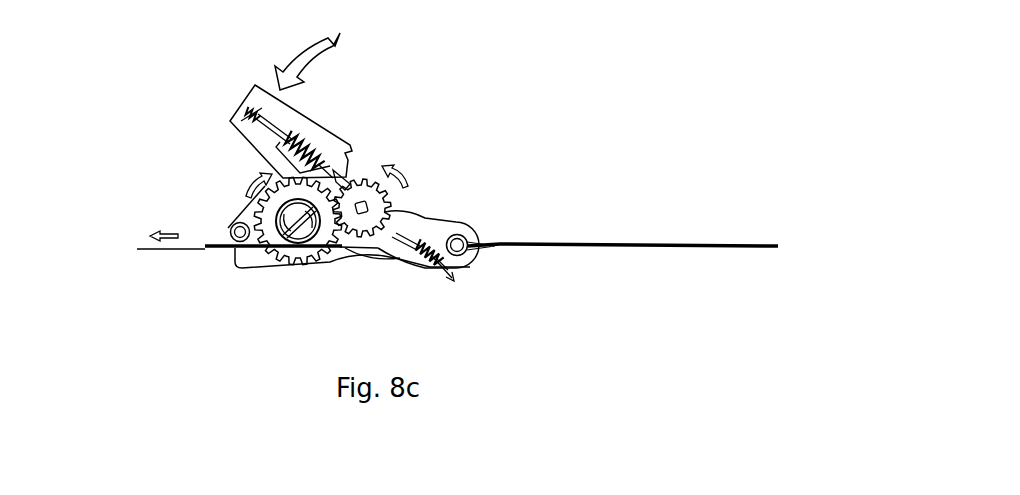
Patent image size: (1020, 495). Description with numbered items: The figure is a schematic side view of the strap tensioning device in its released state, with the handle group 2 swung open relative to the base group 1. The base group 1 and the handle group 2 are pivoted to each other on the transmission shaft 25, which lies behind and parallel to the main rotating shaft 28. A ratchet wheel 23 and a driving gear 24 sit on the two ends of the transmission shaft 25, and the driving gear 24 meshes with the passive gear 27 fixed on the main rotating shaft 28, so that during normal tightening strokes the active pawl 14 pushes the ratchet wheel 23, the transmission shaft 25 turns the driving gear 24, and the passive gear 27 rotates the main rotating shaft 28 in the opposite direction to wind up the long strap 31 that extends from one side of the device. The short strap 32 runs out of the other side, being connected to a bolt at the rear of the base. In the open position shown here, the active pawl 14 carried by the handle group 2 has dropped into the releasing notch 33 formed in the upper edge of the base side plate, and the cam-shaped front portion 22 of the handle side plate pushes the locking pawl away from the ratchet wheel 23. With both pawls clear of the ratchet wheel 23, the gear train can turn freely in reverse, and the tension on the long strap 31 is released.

The base group 1 is at (340, 254).
The handle group 2 is at (242, 121).
The active pawl 14 is at (300, 165).
The front portion of the handle side plate 22 is at (462, 235).
The ratchet wheel 23 is at (365, 238).
The driving gear 24 is at (392, 190).
The transmission shaft 25 is at (427, 217).
The passive gear 27 is at (277, 254).
The main rotating shaft 28 is at (300, 240).
The long strap 31 is at (178, 250).
The short strap 32 is at (565, 250).
The releasing notch 33 is at (352, 182).